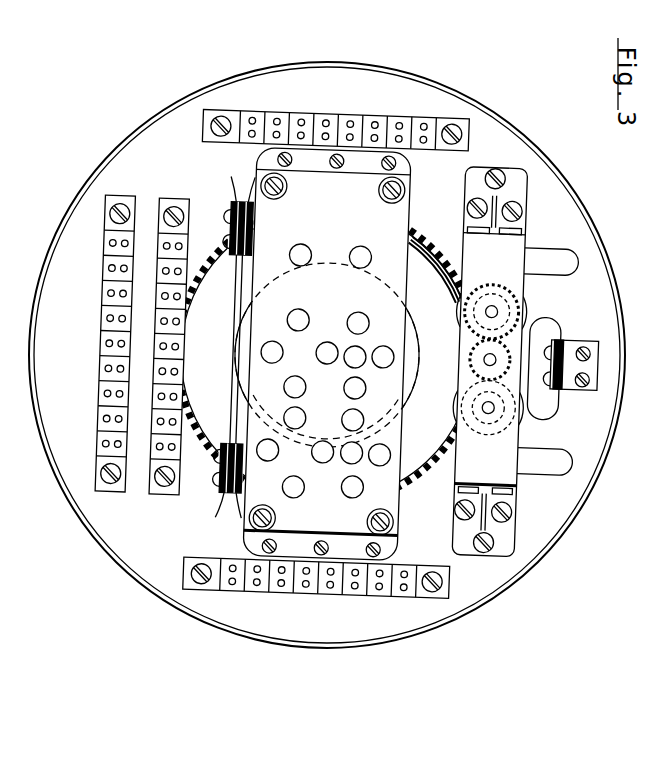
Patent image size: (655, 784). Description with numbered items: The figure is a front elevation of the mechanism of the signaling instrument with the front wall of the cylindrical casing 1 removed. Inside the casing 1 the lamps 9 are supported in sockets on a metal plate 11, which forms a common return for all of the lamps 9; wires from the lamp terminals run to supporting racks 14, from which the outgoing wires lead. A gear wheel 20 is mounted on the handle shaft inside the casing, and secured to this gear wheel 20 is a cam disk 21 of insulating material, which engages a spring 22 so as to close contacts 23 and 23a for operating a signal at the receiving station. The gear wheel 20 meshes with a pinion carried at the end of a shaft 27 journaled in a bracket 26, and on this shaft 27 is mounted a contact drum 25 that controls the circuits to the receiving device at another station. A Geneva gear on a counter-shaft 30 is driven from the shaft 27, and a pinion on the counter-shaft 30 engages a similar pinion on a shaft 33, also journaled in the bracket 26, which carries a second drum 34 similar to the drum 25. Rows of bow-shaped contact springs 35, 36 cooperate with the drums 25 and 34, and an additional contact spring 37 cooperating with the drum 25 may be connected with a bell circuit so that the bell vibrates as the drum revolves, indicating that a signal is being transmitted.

The cylindrical casing 1 is at (340, 647).
The lamps 9 is at (326, 322).
The metal plate 11 is at (399, 519).
The supporting racks 14 is at (210, 561).
The gear wheel 20 is at (428, 241).
The cam disk 21 is at (413, 381).
The spring 22 is at (236, 330).
The contact 23 is at (233, 372).
The contact 23a is at (233, 306).
The contact drum 25 is at (534, 410).
The bracket 26 is at (521, 497).
The shaft 27 is at (490, 402).
The counter-shaft 30 is at (490, 354).
The shaft 33 is at (490, 306).
The second drum 34 is at (527, 300).
The bow-shaped contact springs 35 is at (569, 462).
The bow-shaped contact springs 36 is at (575, 262).
The additional contact spring 37 is at (562, 383).